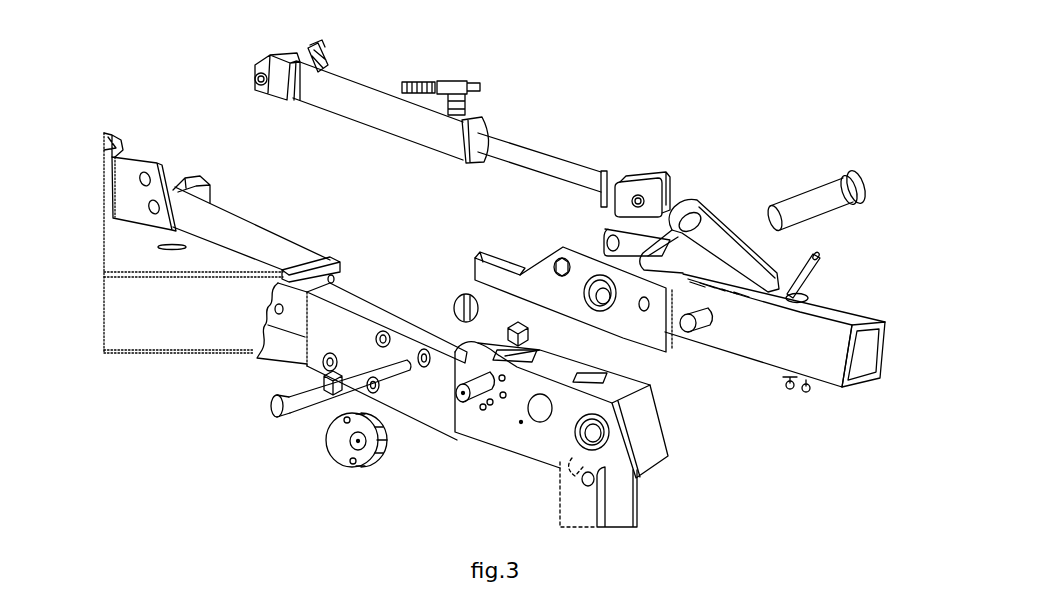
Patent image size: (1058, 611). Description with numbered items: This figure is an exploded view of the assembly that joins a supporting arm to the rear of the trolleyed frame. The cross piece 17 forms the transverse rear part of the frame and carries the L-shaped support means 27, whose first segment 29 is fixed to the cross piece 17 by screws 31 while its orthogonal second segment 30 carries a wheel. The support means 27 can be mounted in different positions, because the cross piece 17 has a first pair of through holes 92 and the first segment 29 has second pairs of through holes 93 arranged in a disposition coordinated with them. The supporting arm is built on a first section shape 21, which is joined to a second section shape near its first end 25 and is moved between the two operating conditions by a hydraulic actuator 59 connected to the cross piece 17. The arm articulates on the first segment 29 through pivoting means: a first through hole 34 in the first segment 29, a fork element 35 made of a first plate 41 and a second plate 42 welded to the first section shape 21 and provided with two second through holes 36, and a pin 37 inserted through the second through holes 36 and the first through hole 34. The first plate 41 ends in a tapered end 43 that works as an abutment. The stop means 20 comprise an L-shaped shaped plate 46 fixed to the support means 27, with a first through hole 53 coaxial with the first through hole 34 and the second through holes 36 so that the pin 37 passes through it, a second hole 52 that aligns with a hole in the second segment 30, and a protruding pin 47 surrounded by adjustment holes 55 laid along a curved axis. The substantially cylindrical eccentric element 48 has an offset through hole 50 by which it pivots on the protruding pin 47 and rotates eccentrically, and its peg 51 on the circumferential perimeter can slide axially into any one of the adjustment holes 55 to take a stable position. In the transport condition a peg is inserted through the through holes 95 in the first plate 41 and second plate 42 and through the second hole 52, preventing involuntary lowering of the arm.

The cross piece 17 is at (200, 216).
The stop means 20 is at (700, 184).
The first section shape 21 is at (837, 310).
The first end 25 is at (872, 346).
The support means 27 is at (353, 280).
The first segment 29 is at (366, 300).
The second segment 30 is at (622, 507).
The screws 31 is at (322, 372).
The first through hole 34 is at (583, 443).
The fork element 35 is at (550, 237).
The second through holes 36 is at (589, 296).
The pin 37 is at (817, 200).
The first plate 41 is at (571, 313).
The second plate 42 is at (626, 237).
The tapered end 43 is at (468, 258).
The shaped plate 46 is at (521, 424).
The protruding pin 47 is at (458, 392).
The eccentric element 48 is at (336, 437).
The through hole 50 is at (357, 442).
The peg 51 is at (356, 372).
The second hole 52 is at (583, 460).
The first through hole 53 is at (609, 420).
The adjustment holes 55 is at (500, 406).
The hydraulic actuators 59 is at (357, 92).
The first pair of through holes 92 is at (333, 265).
The second pairs of through holes 93 is at (376, 337).
The through holes 95 is at (565, 260).